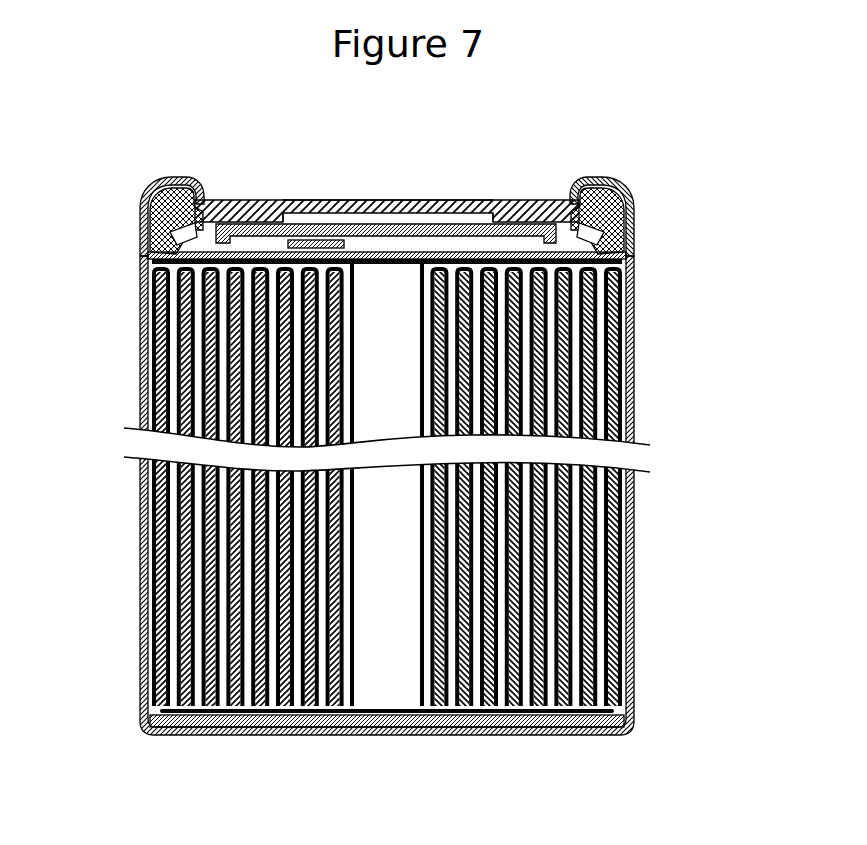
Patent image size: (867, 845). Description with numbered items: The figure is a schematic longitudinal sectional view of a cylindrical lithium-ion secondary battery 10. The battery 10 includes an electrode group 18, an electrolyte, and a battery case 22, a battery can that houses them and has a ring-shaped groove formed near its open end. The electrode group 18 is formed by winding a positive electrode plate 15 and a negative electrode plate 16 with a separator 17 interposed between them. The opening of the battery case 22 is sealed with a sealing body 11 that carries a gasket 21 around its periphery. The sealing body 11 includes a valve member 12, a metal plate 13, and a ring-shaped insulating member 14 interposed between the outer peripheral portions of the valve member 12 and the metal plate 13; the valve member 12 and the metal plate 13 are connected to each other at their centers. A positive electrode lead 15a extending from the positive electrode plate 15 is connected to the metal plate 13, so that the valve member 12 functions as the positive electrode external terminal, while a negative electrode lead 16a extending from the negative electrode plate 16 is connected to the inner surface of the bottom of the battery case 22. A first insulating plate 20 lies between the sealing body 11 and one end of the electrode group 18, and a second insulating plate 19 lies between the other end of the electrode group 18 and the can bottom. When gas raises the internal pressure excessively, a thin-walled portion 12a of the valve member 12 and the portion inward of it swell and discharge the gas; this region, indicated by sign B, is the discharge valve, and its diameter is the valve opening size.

The cylindrical secondary battery 10 is at (96, 104).
The sealing body 11 is at (752, 107).
The valve member 12 is at (548, 198).
The thin-walled portion 12a is at (280, 198).
The metal plate 13 is at (505, 243).
The ring-shaped insulating member 14 is at (633, 172).
The positive electrode plate 15 is at (637, 498).
The positive electrode lead 15a is at (392, 262).
The negative electrode plate 16 is at (637, 550).
The negative electrode lead 16a is at (372, 732).
The separator 17 is at (637, 602).
The electrode group 18 is at (752, 458).
The second insulating plate 19 is at (183, 732).
The first insulating plate 20 is at (140, 270).
The gasket 21 is at (140, 200).
The battery case 22 is at (140, 408).
The discharge valve portion B is at (523, 156).